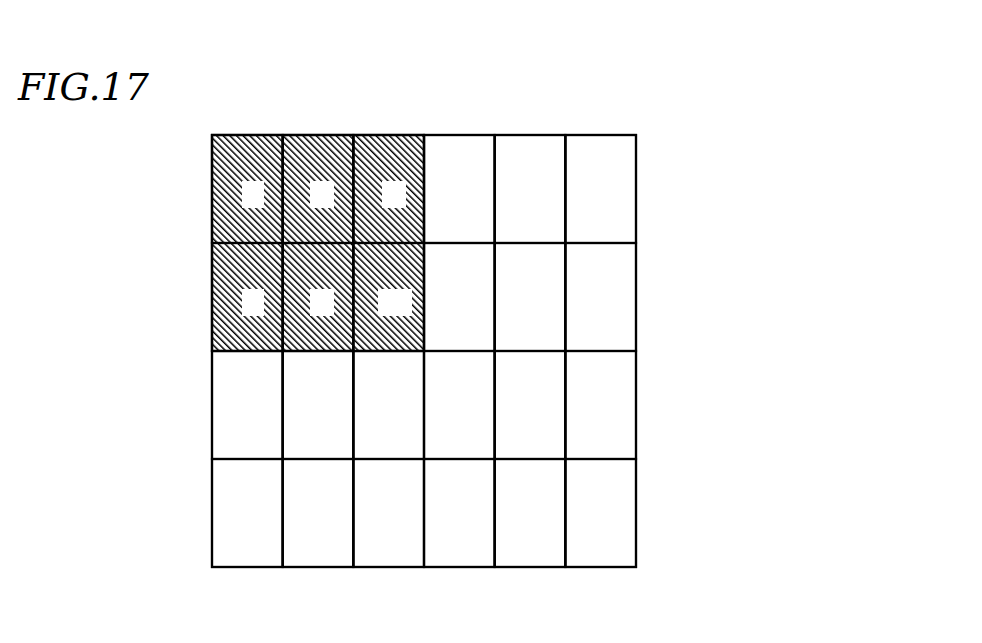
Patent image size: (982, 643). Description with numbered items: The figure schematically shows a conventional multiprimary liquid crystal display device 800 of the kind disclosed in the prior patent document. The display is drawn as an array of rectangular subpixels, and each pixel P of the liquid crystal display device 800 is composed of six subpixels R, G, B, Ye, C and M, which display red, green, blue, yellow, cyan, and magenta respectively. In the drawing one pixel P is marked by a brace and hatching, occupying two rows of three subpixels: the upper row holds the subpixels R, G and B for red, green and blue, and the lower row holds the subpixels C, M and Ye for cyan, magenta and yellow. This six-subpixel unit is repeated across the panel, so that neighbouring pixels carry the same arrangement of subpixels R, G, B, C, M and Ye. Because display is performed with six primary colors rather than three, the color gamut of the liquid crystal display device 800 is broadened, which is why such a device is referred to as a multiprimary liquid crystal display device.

The liquid crystal display device 800 is at (541, 111).
The pixel P is at (208, 128).
The subpixel R is at (353, 297).
The subpixel G is at (424, 297).
The subpixel B is at (494, 297).
The subpixel C is at (353, 405).
The subpixel M is at (424, 405).
The subpixel Ye is at (494, 405).